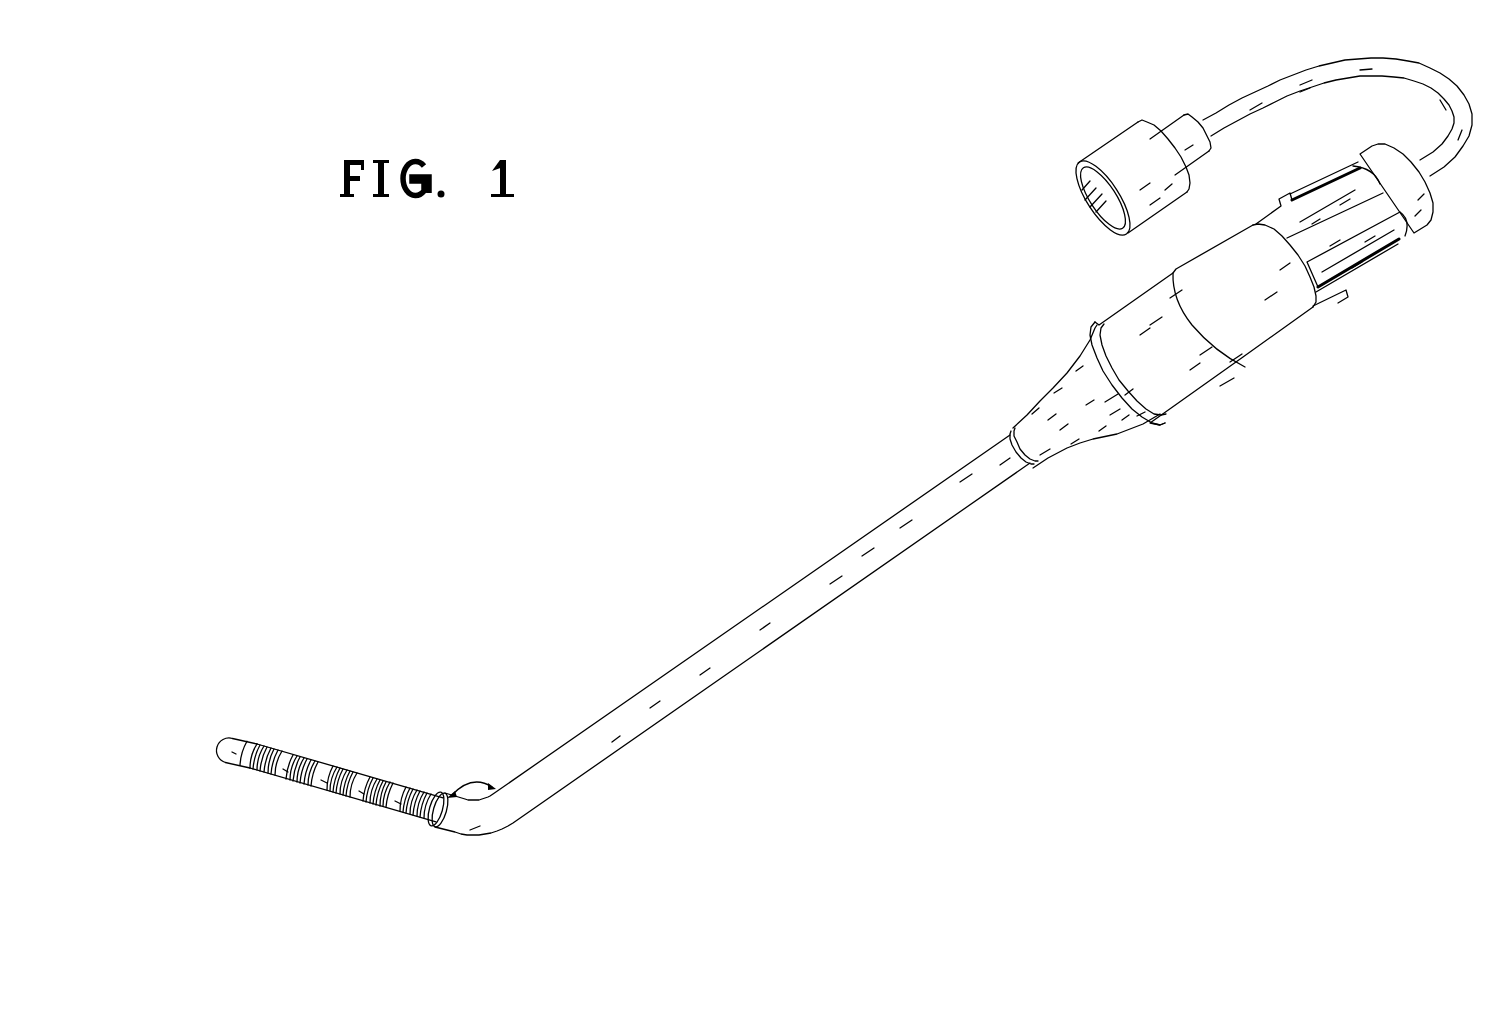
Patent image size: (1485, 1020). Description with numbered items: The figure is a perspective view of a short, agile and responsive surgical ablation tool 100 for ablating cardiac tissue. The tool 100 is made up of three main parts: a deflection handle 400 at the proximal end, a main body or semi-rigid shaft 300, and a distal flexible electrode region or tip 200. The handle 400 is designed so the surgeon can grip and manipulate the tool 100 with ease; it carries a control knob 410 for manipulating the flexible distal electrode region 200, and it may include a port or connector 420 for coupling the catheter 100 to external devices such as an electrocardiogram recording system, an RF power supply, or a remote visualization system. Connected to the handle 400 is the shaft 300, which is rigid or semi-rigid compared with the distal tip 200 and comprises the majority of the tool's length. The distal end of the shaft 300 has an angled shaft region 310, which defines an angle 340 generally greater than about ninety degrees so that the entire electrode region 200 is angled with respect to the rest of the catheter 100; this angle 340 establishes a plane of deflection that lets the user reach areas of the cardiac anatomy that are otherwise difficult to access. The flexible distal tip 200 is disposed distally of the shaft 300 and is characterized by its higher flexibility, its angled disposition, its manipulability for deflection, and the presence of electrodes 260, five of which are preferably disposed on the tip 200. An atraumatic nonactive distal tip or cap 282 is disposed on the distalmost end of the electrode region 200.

The surgical ablation tool 100 is at (735, 336).
The distal flexible electrode region 200 is at (359, 657).
The electrode 260 is at (350, 775).
The atraumatic nonactive distal tip 282 is at (221, 742).
The shaft 300 is at (790, 592).
The angled shaft region 310 is at (486, 870).
The angle 340 is at (466, 786).
The deflection handle 400 is at (1314, 392).
The control knob 410 is at (1142, 290).
The connector 420 is at (1113, 140).